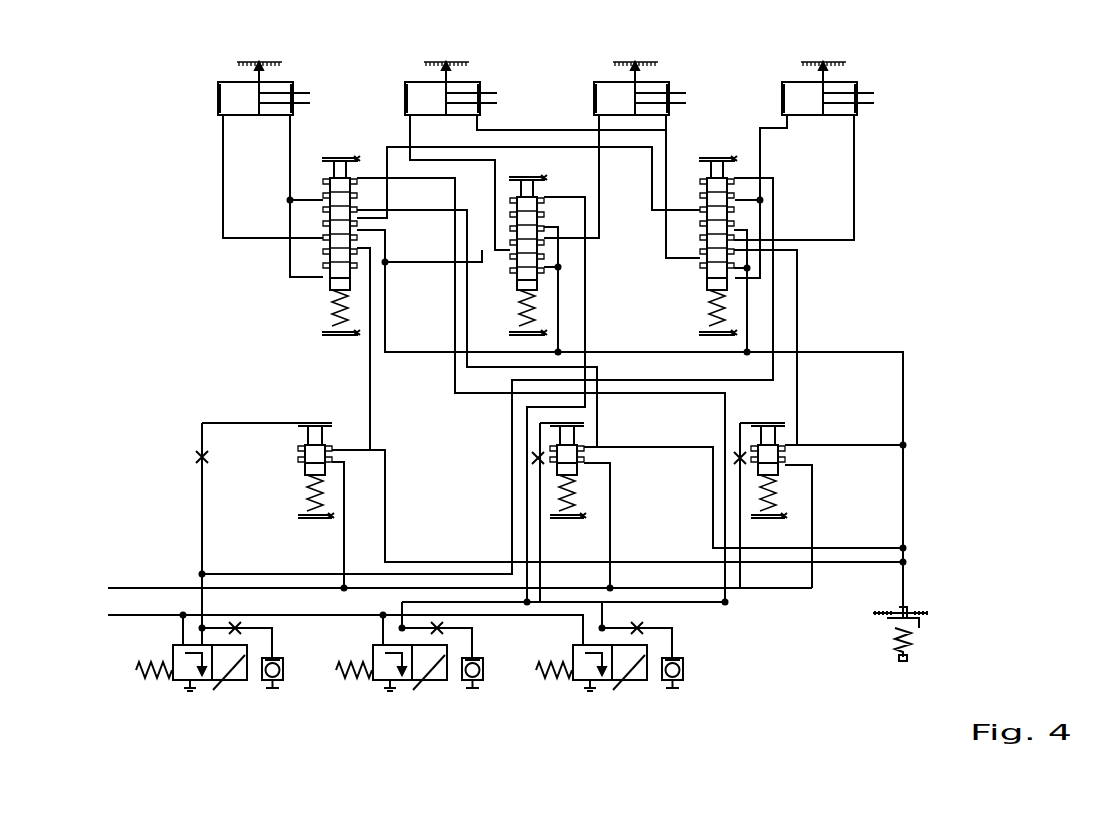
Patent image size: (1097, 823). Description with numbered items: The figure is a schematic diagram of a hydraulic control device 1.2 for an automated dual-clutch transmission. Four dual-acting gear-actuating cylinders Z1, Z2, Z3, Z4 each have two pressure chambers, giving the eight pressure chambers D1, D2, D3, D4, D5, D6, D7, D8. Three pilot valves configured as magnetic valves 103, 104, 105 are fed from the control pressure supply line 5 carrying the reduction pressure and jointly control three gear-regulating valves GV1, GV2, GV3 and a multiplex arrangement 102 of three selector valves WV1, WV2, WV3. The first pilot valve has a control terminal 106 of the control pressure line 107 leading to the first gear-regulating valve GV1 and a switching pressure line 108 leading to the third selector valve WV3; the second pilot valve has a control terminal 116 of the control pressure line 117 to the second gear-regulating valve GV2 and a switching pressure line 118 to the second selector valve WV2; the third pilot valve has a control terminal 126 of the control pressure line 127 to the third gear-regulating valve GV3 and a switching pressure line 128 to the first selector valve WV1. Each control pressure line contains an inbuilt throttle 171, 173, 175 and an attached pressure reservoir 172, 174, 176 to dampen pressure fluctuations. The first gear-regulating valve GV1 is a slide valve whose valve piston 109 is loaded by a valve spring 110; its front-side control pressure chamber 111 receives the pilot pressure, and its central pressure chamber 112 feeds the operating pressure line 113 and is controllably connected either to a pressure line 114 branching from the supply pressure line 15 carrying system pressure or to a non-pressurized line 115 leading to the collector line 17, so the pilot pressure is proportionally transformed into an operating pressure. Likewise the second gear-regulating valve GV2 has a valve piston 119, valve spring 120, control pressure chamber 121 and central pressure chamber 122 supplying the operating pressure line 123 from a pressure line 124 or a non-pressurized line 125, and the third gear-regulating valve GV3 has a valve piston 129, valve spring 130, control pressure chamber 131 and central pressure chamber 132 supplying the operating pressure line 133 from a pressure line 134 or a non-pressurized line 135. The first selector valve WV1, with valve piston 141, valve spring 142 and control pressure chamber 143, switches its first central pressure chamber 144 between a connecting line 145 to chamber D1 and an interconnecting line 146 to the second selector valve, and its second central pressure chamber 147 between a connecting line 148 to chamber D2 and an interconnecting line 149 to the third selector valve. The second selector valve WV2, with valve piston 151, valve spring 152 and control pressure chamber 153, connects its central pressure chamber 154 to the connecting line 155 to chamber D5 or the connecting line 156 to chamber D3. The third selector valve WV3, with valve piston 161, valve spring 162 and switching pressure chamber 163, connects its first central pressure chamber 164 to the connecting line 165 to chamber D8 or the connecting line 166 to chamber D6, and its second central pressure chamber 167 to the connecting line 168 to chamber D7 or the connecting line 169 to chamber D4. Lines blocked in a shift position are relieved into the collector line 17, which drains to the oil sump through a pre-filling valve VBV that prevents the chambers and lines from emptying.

The first gear-actuating cylinder Z1 is at (214, 70).
The second gear-actuating cylinder Z2 is at (408, 70).
The third gear-actuating cylinder Z3 is at (593, 70).
The fourth gear-actuating cylinder Z4 is at (788, 70).
The first pressure chamber of the first gear-actuating cylinder D1 is at (243, 92).
The second pressure chamber of the first gear-actuating cylinder D2 is at (281, 88).
The first pressure chamber of the second gear-actuating cylinder D3 is at (421, 88).
The second pressure chamber of the second gear-actuating cylinder D4 is at (461, 88).
The first pressure chamber of the third gear-actuating cylinder D5 is at (608, 88).
The second pressure chamber of the third gear-actuating cylinder D6 is at (660, 88).
The first pressure chamber of the fourth gear-actuating cylinder D7 is at (806, 88).
The second pressure chamber of the fourth gear-actuating cylinder D8 is at (840, 88).
The first selector valve WV1 is at (321, 245).
The second selector valve WV2 is at (508, 255).
The third selector valve WV3 is at (698, 245).
The first gear-regulating valve GV1 is at (314, 483).
The second gear-regulating valve GV2 is at (567, 483).
The third gear-regulating valve GV3 is at (768, 483).
The magnetic valve 103 is at (181, 683).
The magnetic valve 104 is at (382, 683).
The magnetic valve 105 is at (585, 683).
The pressure reservoir 172 is at (263, 683).
The pressure reservoir 174 is at (462, 687).
The pressure reservoir 176 is at (683, 673).
The pre-filling valve VBV is at (923, 619).
The supply pressure line 15 is at (110, 590).
The control pressure supply line 5 is at (127, 617).
The second central pressure chamber of the first selector valve 147 is at (322, 173).
The first central pressure chamber of the first selector valve 144 is at (310, 198).
The valve piston 141 is at (312, 220).
The valve spring 142 is at (322, 245).
The operating pressure line 113 is at (322, 283).
The front-side control pressure chamber 121 is at (322, 300).
The central pressure chamber 122 is at (330, 330).
The throttle 173 is at (557, 421).
The front-side control pressure chamber 111 is at (526, 456).
The central pressure chamber 112 is at (307, 423).
The valve piston 109 is at (243, 423).
The throttle 171 is at (188, 455).
The control pressure line 107 is at (298, 512).
The valve spring 110 is at (549, 475).
The pressure line 114 is at (549, 505).
The valve piston 119 is at (343, 540).
The valve spring 120 is at (250, 574).
The switching pressure line 108 is at (147, 672).
The multiplex arrangement 102 is at (866, 165).
The first central pressure chamber of the third selector valve 164 is at (866, 197).
The valve piston 161 is at (765, 225).
The valve spring 162 is at (762, 240).
The operating pressure line 133 is at (748, 303).
The throttle 175 is at (800, 308).
The front-side control pressure chamber 131 is at (802, 382).
The central pressure chamber 132 is at (840, 370).
The non-pressurized line 135 is at (905, 385).
The valve piston 129 is at (735, 433).
The valve spring 130 is at (866, 442).
The pressure line 134 is at (906, 445).
The non-pressurized line 125 is at (815, 495).
The non-pressurized line 115 is at (795, 548).
The collector line 17 is at (855, 562).
The control pressure line 127 is at (906, 580).
The switching pressure line 128 is at (742, 580).
The pressure line 124 is at (640, 612).
The connecting line 145 is at (229, 152).
The front-side control pressure chamber 143 is at (223, 117).
The connecting line 148 is at (290, 127).
The interconnecting line 146 is at (306, 168).
The operating pressure line 123 is at (326, 165).
The interconnecting line 149 is at (341, 160).
The connecting line 156 is at (388, 170).
The connecting line 169 is at (483, 178).
The valve piston 151 is at (505, 243).
The central pressure chamber 154 is at (494, 280).
The front-side control pressure chamber 153 is at (541, 194).
The connecting line 155 is at (560, 228).
The connecting line 166 is at (546, 327).
The front-side switching pressure chamber 163 is at (695, 170).
The valve spring 152 is at (690, 205).
The second central pressure chamber of the third selector valve 167 is at (752, 175).
The connecting line 168 is at (773, 175).
The connecting line 165 is at (855, 135).
The hydraulic control device 1.2 is at (870, 155).
The control terminal 106 is at (212, 610).
The control terminal 116 is at (392, 612).
The switching pressure line 118 is at (553, 592).
The control pressure line 117 is at (502, 592).
The control terminal 126 is at (612, 623).